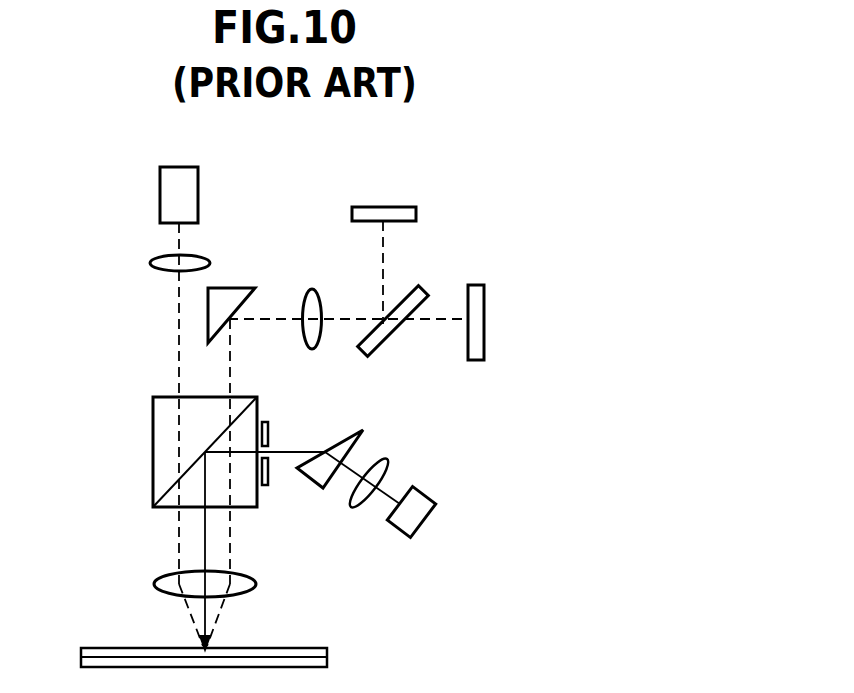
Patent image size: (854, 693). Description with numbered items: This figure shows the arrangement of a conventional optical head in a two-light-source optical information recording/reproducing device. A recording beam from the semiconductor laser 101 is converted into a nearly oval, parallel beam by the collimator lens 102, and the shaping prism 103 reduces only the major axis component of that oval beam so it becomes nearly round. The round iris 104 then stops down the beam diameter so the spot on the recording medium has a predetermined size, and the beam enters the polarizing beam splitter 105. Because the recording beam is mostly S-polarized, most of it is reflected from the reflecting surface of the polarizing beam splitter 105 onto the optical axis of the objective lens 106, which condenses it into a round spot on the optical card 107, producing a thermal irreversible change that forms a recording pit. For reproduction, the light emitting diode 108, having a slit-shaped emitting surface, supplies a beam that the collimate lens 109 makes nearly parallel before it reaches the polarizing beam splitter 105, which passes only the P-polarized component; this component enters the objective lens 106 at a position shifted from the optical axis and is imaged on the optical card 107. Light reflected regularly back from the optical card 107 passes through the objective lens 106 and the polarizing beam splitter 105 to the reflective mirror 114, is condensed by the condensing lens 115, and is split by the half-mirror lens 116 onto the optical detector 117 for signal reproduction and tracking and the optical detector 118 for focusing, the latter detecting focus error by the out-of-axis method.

The semiconductor laser 101 is at (436, 507).
The collimator lens 102 is at (387, 462).
The shaping prism 103 is at (363, 430).
The round iris 104 is at (268, 432).
The polarizing beam splitter 105 is at (153, 463).
The objective lens 106 is at (256, 585).
The optical card 107 is at (327, 652).
The light emitting diode 108 is at (160, 190).
The collimate lens 109 is at (153, 261).
The reflective mirror 114 is at (242, 288).
The condensing lens 115 is at (313, 289).
The half-mirror lens 116 is at (420, 285).
The optical detector for signal reproduction and tracking 117 is at (483, 285).
The optical detector for focusing 118 is at (388, 207).